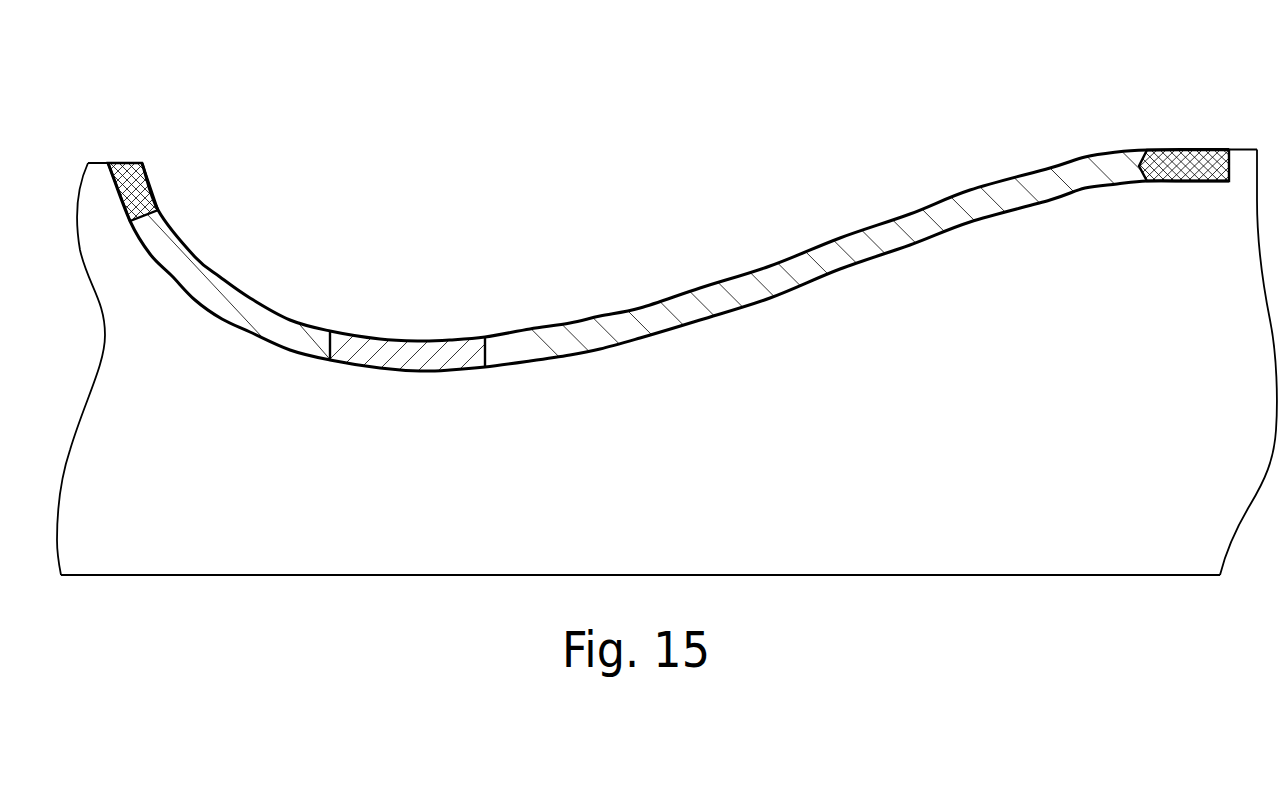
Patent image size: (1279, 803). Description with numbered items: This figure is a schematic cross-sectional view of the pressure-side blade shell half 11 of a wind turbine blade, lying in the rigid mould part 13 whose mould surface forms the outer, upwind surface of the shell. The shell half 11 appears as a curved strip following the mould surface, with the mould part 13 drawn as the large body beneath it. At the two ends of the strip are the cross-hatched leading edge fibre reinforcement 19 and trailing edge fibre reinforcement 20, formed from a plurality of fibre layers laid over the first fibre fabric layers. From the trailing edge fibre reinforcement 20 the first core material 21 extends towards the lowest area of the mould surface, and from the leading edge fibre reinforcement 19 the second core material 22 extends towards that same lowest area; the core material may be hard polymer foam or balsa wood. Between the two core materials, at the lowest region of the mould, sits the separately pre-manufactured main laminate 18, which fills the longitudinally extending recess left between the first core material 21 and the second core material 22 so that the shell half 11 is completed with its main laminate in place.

The blade shell half 11 is at (829, 225).
The mould part 13 is at (658, 476).
The central section 18 is at (410, 353).
The leading edge fibre reinforcement 19 is at (1192, 162).
The trailing edge fibre reinforcement 20 is at (139, 196).
The first core material 21 is at (254, 302).
The second core material 22 is at (655, 320).